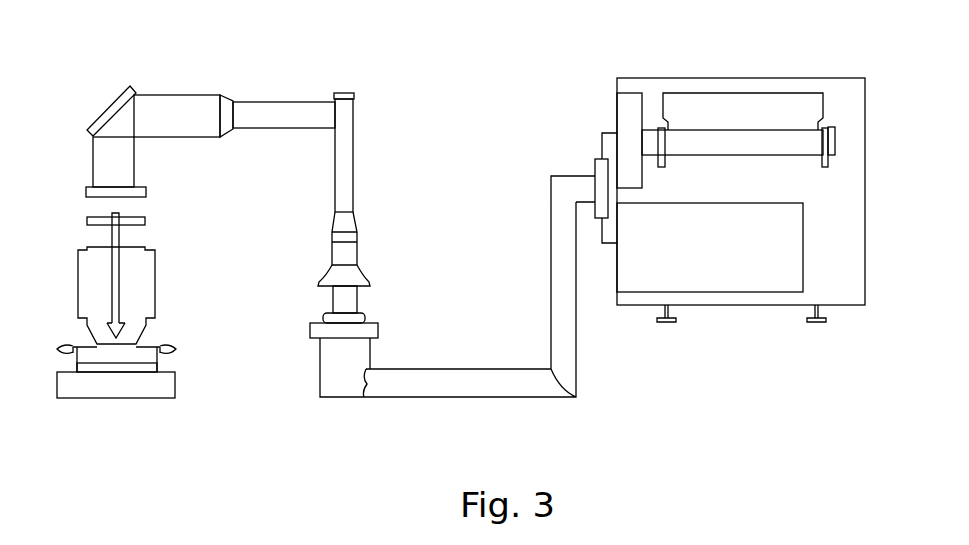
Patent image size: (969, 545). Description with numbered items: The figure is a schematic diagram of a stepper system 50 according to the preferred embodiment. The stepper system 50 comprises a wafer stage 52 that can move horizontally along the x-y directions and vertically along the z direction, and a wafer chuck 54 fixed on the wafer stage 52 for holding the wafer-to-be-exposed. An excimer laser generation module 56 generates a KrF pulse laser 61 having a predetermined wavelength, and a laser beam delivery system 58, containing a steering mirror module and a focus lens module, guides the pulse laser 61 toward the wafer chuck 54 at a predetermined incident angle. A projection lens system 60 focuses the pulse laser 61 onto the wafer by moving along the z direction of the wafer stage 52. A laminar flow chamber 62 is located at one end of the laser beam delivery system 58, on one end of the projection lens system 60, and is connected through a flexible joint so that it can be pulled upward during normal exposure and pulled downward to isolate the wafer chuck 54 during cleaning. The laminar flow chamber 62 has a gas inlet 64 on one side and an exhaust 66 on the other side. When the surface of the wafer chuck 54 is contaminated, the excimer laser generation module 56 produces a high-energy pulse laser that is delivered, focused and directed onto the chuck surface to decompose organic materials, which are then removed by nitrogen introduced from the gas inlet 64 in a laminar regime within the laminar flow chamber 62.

The stepper system 50 is at (882, 394).
The wafer stage 52 is at (163, 385).
The wafer chuck 54 is at (147, 368).
The excimer laser generation module 56 is at (742, 108).
The laser beam delivery system 58 is at (453, 386).
The projection lens system 60 is at (143, 283).
The pulse laser 61 is at (115, 291).
The laminar flow chamber 62 is at (162, 329).
The gas inlet 64 is at (58, 347).
The exhaust 66 is at (173, 347).